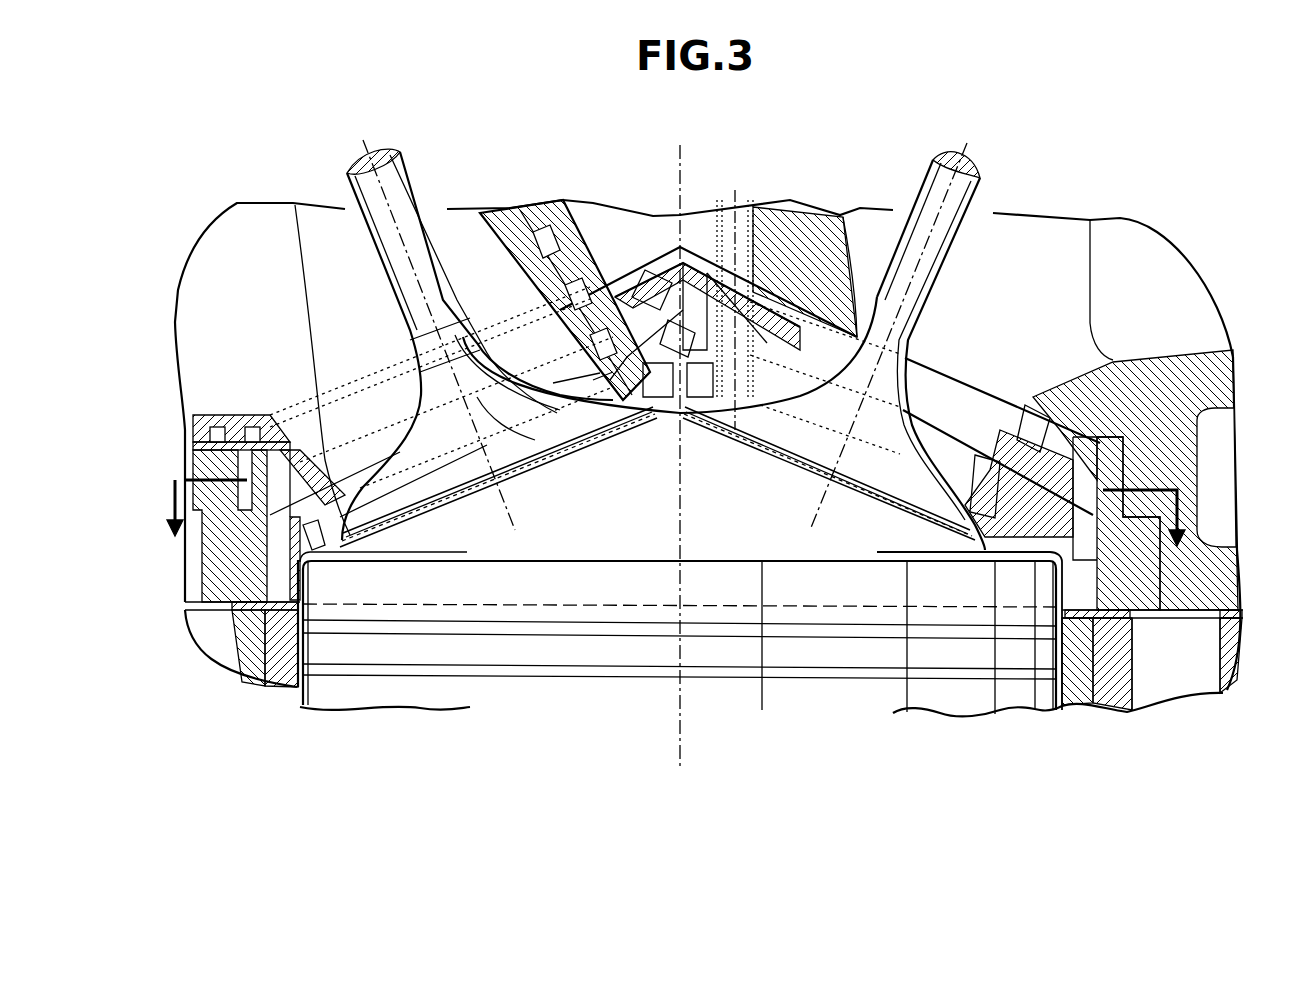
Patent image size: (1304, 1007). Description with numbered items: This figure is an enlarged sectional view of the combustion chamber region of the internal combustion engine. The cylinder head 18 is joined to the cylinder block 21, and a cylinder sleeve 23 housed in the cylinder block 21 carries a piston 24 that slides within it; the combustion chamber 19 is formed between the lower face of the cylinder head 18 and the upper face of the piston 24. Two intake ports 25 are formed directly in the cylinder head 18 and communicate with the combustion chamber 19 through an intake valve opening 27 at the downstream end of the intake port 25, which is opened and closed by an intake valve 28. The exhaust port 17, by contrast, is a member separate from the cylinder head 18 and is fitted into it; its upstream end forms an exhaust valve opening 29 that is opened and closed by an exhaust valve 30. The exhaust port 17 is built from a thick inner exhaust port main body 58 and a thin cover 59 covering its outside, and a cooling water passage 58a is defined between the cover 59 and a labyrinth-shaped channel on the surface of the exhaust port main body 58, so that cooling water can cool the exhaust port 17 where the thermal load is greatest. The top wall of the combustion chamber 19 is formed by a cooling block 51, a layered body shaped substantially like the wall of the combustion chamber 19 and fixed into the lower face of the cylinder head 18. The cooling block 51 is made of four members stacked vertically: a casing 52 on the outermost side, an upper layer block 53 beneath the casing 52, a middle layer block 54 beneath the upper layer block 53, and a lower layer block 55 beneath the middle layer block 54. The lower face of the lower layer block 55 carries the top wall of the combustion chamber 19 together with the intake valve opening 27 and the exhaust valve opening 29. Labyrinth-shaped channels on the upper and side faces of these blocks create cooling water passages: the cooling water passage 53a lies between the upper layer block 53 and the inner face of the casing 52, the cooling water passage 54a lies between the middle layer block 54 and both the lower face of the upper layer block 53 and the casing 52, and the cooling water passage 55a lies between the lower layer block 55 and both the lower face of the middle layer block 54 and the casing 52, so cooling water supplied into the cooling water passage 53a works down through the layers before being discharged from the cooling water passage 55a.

The exhaust port 17 is at (565, 252).
The cylinder head 18 is at (1236, 364).
The combustion chamber 19 is at (630, 522).
The cylinder block 21 is at (240, 684).
The cylinder sleeve 23 is at (310, 640).
The piston 24 is at (573, 570).
The intake port 25 is at (1113, 358).
The intake valve opening 27 is at (965, 527).
The intake valve 28 is at (945, 247).
The exhaust valve opening 29 is at (373, 523).
The exhaust valve 30 is at (405, 303).
The cooling block 51 is at (1083, 308).
The casing 52 is at (1067, 400).
The upper layer block 53 is at (1007, 430).
The cooling water passage 53a is at (660, 283).
The middle layer block 54 is at (987, 490).
The cooling water passage 54a is at (700, 313).
The lower layer block 55 is at (967, 497).
The cooling water passage 55a is at (660, 417).
The exhaust port main body 58 is at (490, 212).
The cooling water passage 58a is at (252, 415).
The cover 59 is at (576, 266).